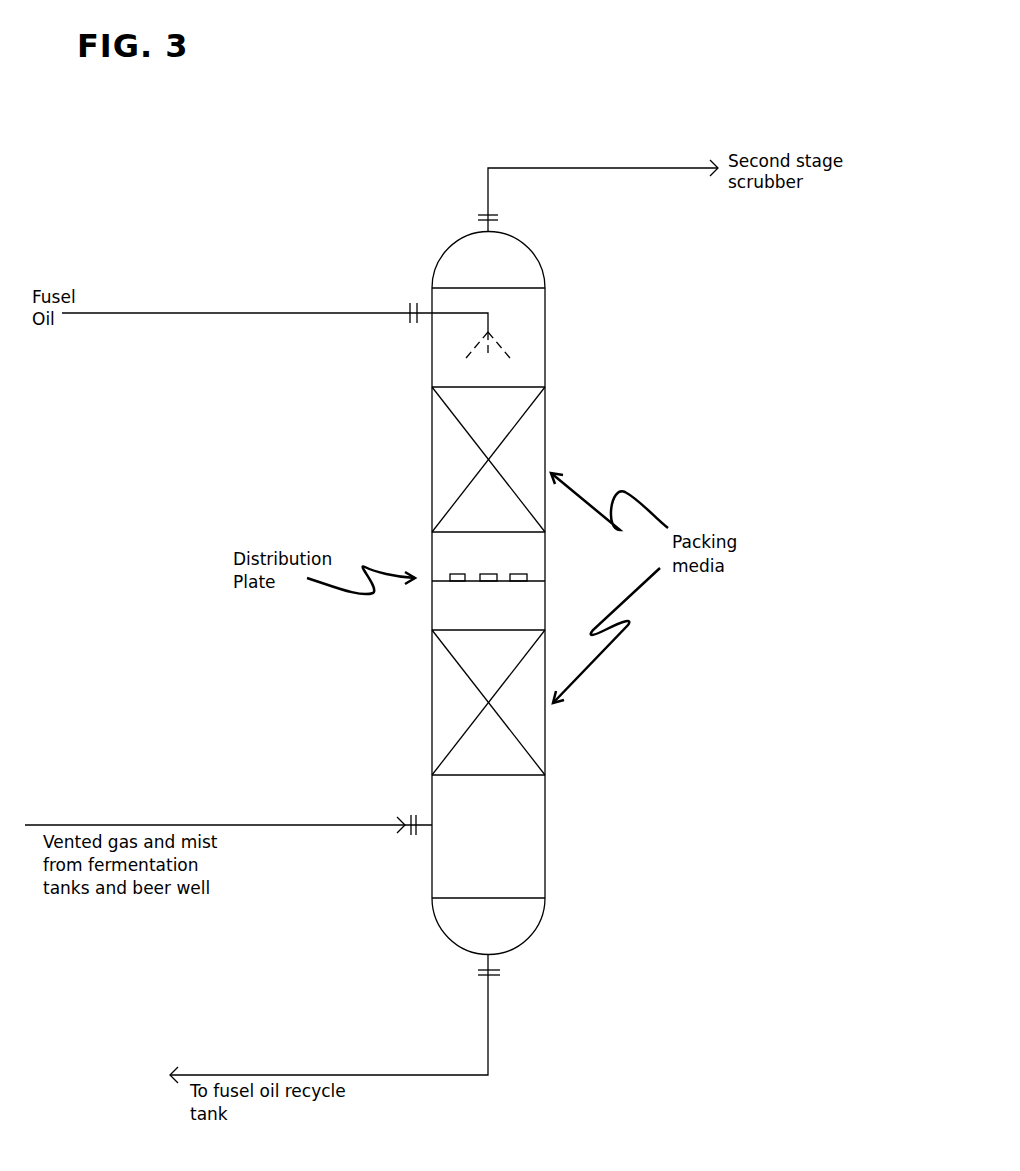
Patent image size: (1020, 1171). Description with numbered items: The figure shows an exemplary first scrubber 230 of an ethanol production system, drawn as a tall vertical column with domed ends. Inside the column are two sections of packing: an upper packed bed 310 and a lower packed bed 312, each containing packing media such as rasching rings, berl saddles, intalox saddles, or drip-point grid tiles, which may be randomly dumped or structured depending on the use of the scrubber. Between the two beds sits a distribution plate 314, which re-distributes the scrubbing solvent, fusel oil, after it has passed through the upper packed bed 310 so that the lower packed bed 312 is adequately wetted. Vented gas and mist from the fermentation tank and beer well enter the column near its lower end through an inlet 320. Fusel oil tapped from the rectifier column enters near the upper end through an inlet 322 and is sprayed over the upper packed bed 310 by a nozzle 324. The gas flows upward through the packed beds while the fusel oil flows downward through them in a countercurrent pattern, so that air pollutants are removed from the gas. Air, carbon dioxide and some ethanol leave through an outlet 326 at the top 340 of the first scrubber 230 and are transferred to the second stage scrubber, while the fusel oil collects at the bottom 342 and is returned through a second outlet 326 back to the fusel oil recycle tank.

The first scrubber 230 is at (545, 362).
The upper packed bed 310 is at (545, 448).
The lower packed bed 312 is at (545, 730).
The distribution plate 314 is at (432, 581).
The inlet 320 is at (432, 822).
The inlet 322 is at (432, 312).
The nozzle 324 is at (488, 323).
The outlet 326 is at (488, 232).
The top 340 is at (542, 262).
The bottom 342 is at (545, 912).